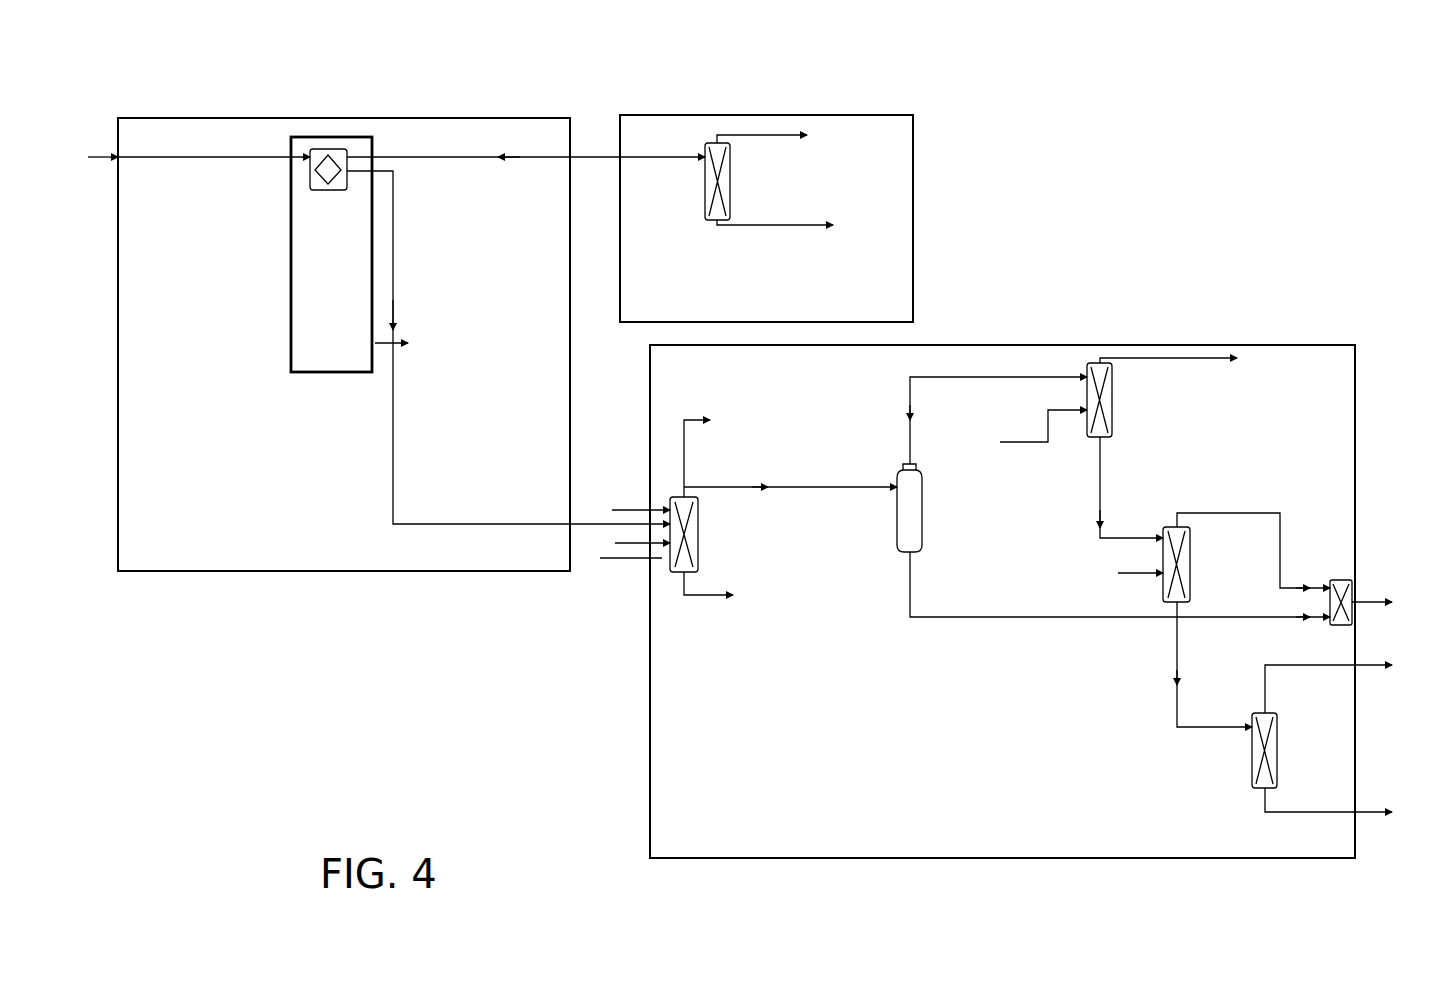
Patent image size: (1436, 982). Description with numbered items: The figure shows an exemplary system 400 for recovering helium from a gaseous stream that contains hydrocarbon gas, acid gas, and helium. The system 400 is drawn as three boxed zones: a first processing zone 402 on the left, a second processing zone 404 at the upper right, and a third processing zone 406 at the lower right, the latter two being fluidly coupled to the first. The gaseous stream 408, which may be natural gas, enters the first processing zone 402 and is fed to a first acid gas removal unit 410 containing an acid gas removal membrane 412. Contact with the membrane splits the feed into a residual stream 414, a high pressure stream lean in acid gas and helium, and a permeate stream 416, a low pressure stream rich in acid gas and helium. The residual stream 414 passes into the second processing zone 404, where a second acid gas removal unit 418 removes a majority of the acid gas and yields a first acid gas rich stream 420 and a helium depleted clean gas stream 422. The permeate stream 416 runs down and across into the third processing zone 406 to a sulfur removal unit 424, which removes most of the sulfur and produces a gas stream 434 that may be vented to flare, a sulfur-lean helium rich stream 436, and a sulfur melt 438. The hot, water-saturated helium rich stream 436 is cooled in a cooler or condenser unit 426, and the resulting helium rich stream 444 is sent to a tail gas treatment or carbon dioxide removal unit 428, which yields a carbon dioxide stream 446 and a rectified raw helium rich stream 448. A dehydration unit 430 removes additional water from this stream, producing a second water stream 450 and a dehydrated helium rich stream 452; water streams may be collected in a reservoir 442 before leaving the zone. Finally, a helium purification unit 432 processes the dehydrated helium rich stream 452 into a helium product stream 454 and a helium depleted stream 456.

The system 400 is at (233, 82).
The first processing zone 402 is at (117, 480).
The second processing zone 404 is at (780, 114).
The third processing zone 406 is at (648, 773).
The gaseous stream 408 is at (102, 152).
The first acid gas removal unit 410 is at (315, 240).
The acid gas removal membrane 412 is at (330, 135).
The residual stream 414 is at (545, 160).
The permeate stream 416 is at (548, 520).
The second acid gas removal unit 418 is at (703, 190).
The first acid gas rich stream 420 is at (803, 227).
The helium depleted clean gas stream 422 is at (765, 137).
The sulfur removal unit 424 is at (698, 523).
The cooler or condenser unit 426 is at (925, 493).
The tail gas treatment or carbon dioxide removal unit 428 is at (1113, 378).
The dehydration unit 430 is at (1192, 536).
The helium purification unit 432 is at (1278, 719).
The gas stream 434 is at (680, 453).
The helium rich stream 436 is at (790, 478).
The sulfur melt 438 is at (690, 597).
The reservoir 442 is at (1346, 586).
The helium rich stream 444 is at (1020, 375).
The carbon dioxide stream 446 is at (1165, 356).
The helium rich stream 448 is at (1090, 460).
The second water stream 450 is at (1240, 512).
The dehydrated helium rich stream 452 is at (1172, 632).
The helium product stream 454 is at (1308, 813).
The helium depleted stream 456 is at (1312, 665).